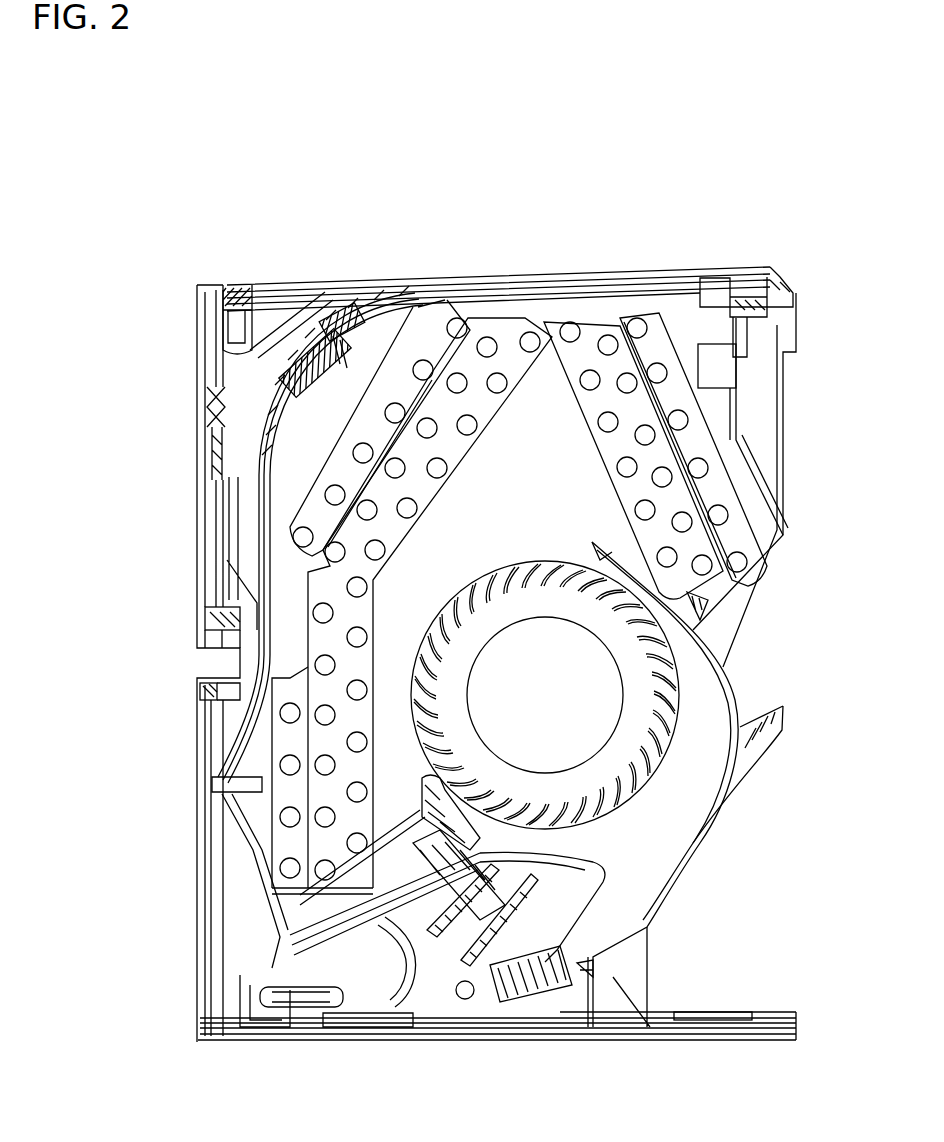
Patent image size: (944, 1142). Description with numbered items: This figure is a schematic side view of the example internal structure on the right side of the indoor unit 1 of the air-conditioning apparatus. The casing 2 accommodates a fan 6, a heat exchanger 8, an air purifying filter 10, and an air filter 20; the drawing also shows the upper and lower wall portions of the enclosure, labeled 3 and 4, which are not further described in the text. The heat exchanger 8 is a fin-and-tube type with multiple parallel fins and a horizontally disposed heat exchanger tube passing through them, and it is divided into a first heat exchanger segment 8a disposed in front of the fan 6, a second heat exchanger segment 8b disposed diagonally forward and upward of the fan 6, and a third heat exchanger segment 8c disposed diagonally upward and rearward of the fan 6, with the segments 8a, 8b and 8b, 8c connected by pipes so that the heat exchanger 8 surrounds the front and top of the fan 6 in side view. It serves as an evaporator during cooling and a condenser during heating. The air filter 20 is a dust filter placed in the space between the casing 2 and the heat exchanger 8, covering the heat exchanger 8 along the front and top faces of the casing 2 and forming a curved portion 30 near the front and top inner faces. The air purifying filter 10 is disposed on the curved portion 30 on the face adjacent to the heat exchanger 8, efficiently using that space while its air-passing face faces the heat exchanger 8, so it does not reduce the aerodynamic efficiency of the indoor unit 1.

The indoor unit 1 is at (770, 212).
The casing 2 is at (200, 528).
The top plate 3 is at (512, 283).
The bottom plate 4 is at (512, 1040).
The fan 6 is at (607, 703).
The heat exchanger 8 is at (295, 588).
The first heat exchanger segment 8a is at (298, 732).
The second heat exchanger segment 8b is at (460, 322).
The third heat exchanger segment 8c is at (590, 345).
The air purifying filter 10 is at (198, 333).
The air filter 20 is at (266, 462).
The curved portion 30 is at (307, 310).